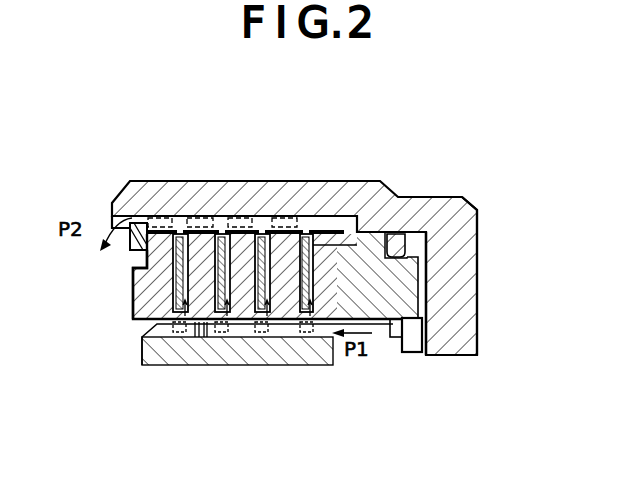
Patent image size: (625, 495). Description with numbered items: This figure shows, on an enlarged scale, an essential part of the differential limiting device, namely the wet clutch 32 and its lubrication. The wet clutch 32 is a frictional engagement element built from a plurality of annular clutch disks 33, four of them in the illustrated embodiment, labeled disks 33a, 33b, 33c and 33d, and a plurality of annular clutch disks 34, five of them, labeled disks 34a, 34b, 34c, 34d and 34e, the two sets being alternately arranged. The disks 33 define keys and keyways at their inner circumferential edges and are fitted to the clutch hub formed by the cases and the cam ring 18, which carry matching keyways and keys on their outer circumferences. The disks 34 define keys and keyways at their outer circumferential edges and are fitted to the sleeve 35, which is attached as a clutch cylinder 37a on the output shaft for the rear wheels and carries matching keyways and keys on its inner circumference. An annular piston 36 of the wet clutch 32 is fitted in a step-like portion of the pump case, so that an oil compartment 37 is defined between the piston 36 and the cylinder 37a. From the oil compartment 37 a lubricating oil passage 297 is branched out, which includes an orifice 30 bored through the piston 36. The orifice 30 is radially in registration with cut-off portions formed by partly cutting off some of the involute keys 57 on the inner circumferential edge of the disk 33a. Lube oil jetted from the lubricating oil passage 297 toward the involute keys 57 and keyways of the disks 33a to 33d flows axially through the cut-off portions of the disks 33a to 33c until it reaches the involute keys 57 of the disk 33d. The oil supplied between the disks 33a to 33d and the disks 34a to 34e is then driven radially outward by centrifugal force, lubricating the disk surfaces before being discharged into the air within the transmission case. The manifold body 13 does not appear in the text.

The manifold plate 13 is at (336, 172).
The cam ring 18 is at (152, 352).
The orifice 30 is at (397, 330).
The wet clutch 32 is at (199, 205).
The annular clutch disks 33 is at (345, 245).
The clutch disk 33a is at (303, 225).
The clutch disk 33b is at (260, 226).
The clutch disk 33c is at (224, 228).
The clutch disk 33d is at (178, 229).
The annular clutch disks 34 is at (327, 275).
The clutch disk 34a is at (323, 322).
The clutch disk 34b is at (287, 337).
The clutch disk 34c is at (241, 334).
The clutch disk 34d is at (196, 334).
The clutch disk 34e is at (150, 294).
The sleeve 35 is at (412, 197).
The piston 36 is at (420, 277).
The oil compartment 37 is at (426, 307).
The cylinder 37a is at (467, 200).
The involute keys 57 is at (205, 338).
The lubricating oil passage 297 is at (415, 333).